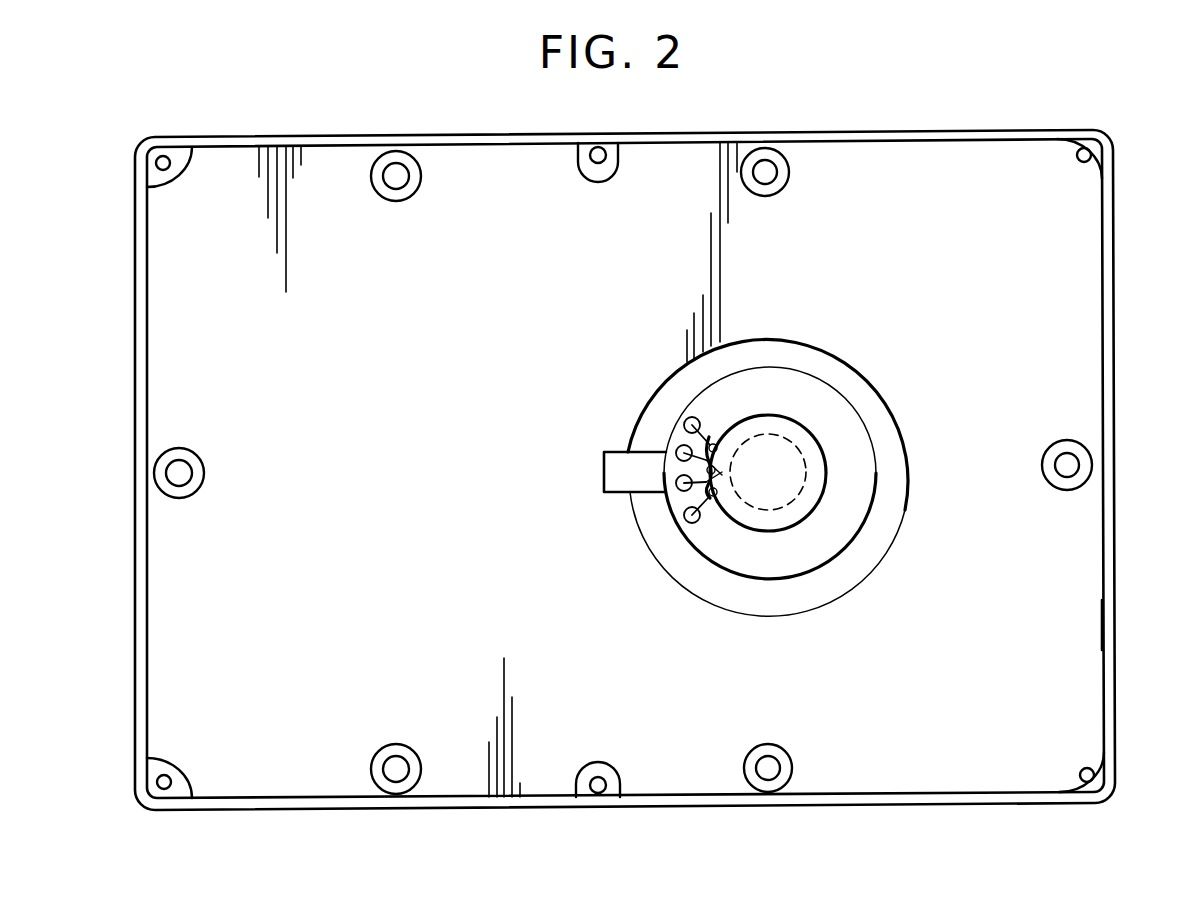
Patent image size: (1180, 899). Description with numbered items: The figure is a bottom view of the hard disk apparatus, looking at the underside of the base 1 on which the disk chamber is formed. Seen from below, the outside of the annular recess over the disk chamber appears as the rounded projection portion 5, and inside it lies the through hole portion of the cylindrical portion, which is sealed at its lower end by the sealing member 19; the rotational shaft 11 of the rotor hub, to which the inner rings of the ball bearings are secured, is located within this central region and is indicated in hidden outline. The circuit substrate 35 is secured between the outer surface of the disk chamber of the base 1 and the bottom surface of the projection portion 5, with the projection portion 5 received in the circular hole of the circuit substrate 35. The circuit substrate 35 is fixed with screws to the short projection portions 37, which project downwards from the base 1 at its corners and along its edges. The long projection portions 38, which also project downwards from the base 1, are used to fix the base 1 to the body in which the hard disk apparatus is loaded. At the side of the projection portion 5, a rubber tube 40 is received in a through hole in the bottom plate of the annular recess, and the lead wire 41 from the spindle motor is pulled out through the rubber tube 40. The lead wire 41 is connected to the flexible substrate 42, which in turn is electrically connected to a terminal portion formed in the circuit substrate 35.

The base 1 is at (1050, 125).
The projection portion 5 is at (873, 500).
The rotational shaft 11 is at (753, 505).
The sealing member 19 is at (797, 512).
The circuit substrate 35 is at (1088, 623).
The short projection portion 37 is at (175, 165).
The long projection portion 38 is at (410, 162).
The rubber tube 40 is at (709, 466).
The lead wire 41 is at (697, 495).
The flexible substrate 42 is at (713, 403).